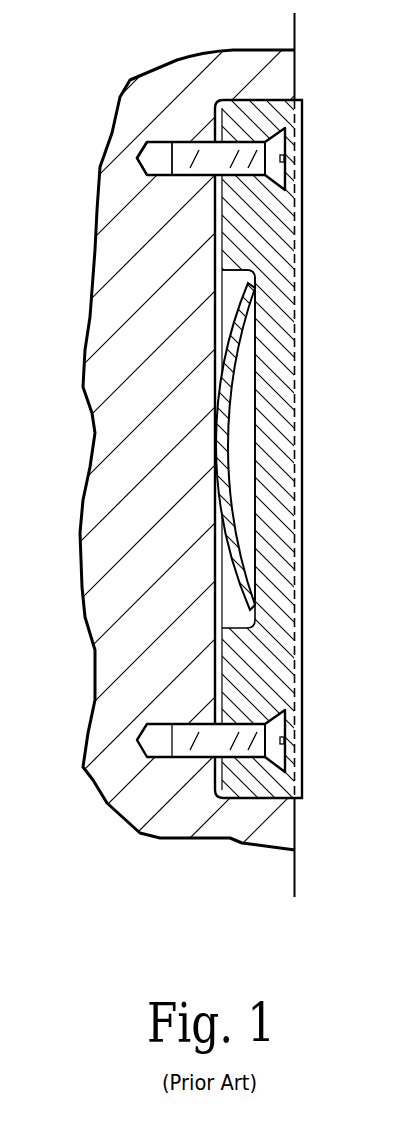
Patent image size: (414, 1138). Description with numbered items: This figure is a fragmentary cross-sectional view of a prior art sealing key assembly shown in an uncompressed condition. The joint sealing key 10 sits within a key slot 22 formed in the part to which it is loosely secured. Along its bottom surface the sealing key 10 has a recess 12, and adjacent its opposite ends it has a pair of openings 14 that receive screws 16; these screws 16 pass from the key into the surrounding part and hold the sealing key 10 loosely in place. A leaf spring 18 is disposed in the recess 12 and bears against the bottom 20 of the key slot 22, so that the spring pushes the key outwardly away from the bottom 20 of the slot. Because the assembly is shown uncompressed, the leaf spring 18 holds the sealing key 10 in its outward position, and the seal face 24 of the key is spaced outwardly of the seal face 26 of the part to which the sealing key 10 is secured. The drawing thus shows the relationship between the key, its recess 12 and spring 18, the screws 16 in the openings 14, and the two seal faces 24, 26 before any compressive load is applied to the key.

The joint sealing key 10 is at (278, 410).
The recess 12 is at (257, 357).
The openings 14 is at (232, 143).
The screws 16 is at (182, 160).
The leaf spring 18 is at (222, 488).
The bottom of the key slot 20 is at (216, 317).
The key slot 22 is at (227, 290).
The seal face 24 is at (302, 227).
The seal face of the part 26 is at (295, 820).